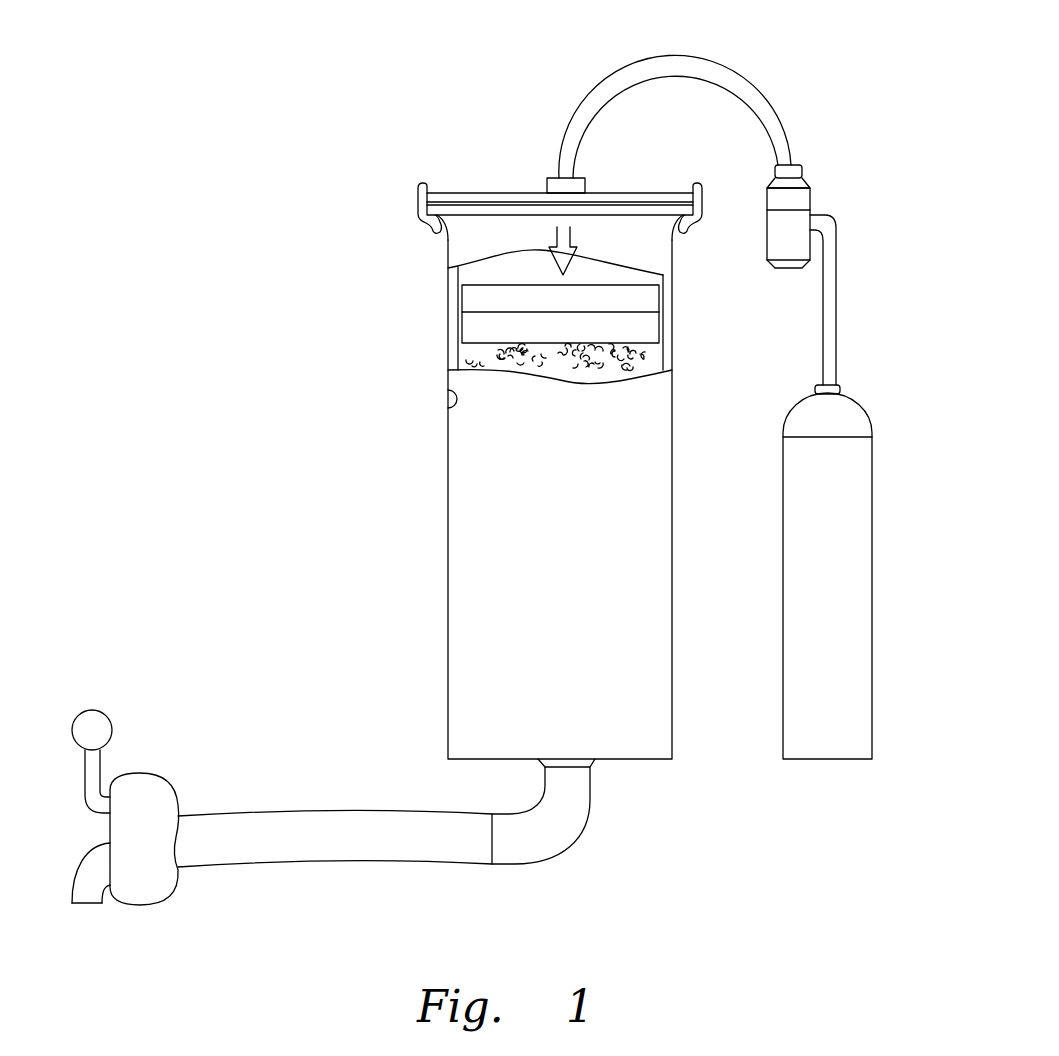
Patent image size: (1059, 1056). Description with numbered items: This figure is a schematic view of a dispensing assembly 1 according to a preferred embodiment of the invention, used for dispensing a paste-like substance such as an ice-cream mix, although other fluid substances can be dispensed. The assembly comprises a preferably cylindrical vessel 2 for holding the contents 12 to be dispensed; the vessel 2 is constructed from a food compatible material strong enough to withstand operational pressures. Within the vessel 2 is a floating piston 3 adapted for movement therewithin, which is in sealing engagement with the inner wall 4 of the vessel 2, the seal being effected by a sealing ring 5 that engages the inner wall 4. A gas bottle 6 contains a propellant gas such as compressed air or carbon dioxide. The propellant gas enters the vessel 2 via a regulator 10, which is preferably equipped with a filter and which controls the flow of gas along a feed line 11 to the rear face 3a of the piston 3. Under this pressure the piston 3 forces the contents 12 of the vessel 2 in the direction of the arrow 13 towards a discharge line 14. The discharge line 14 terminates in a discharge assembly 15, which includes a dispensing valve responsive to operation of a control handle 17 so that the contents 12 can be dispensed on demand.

The dispensing assembly 1 is at (357, 105).
The vessel 2 is at (448, 550).
The floating piston 3 is at (483, 328).
The rear face of piston 3a is at (500, 285).
The inner wall 4 is at (448, 405).
The sealing ring 5 is at (473, 300).
The gas bottle 6 is at (862, 467).
The regulator 10 is at (810, 188).
The feed line 11 is at (735, 72).
The contents 12 is at (478, 480).
The arrow 13 is at (528, 268).
The discharge line 14 is at (327, 810).
The discharge assembly 15 is at (195, 742).
The control handle 17 is at (92, 710).